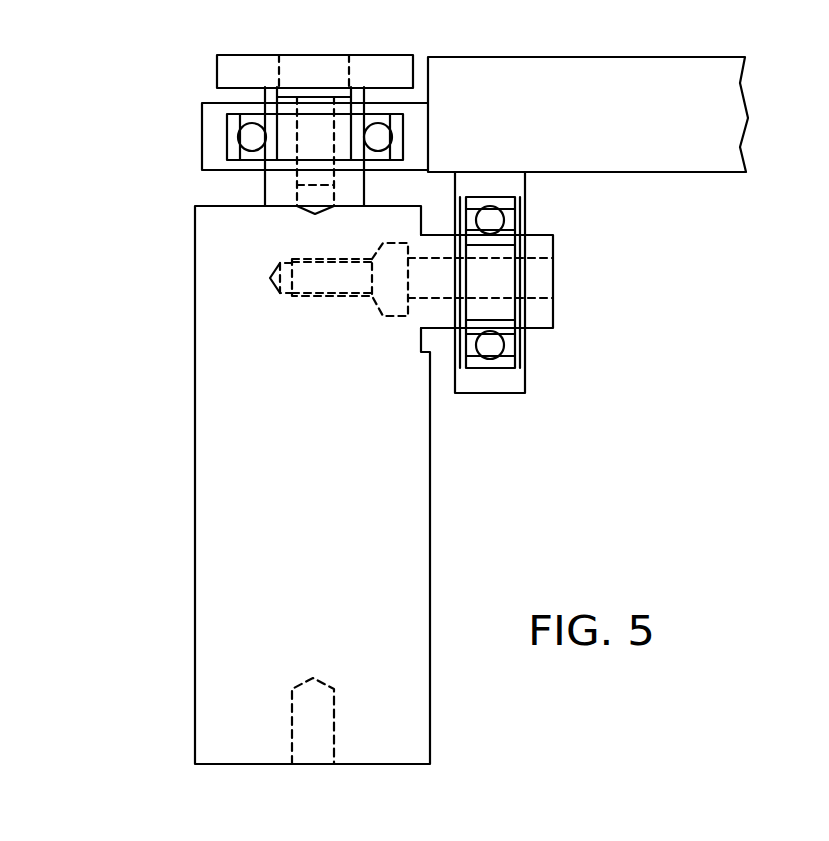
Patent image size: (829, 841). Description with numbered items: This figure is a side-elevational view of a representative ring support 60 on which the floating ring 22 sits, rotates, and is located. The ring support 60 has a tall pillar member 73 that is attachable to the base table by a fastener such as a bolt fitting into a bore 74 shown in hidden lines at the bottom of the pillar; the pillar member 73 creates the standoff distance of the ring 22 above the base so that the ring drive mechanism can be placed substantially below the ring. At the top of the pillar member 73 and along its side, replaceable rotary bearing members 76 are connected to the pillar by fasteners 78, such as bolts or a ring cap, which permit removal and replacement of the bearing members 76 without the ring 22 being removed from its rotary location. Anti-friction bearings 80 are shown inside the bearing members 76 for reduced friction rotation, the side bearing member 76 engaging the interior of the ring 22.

The floating ring 22 is at (667, 165).
The ring support 60 is at (148, 410).
The pillar member 73 is at (205, 590).
The bore 74 is at (325, 724).
The rotary bearing member 76 is at (202, 150).
The fastener 78 is at (348, 78).
The anti-friction bearing 80 is at (242, 136).